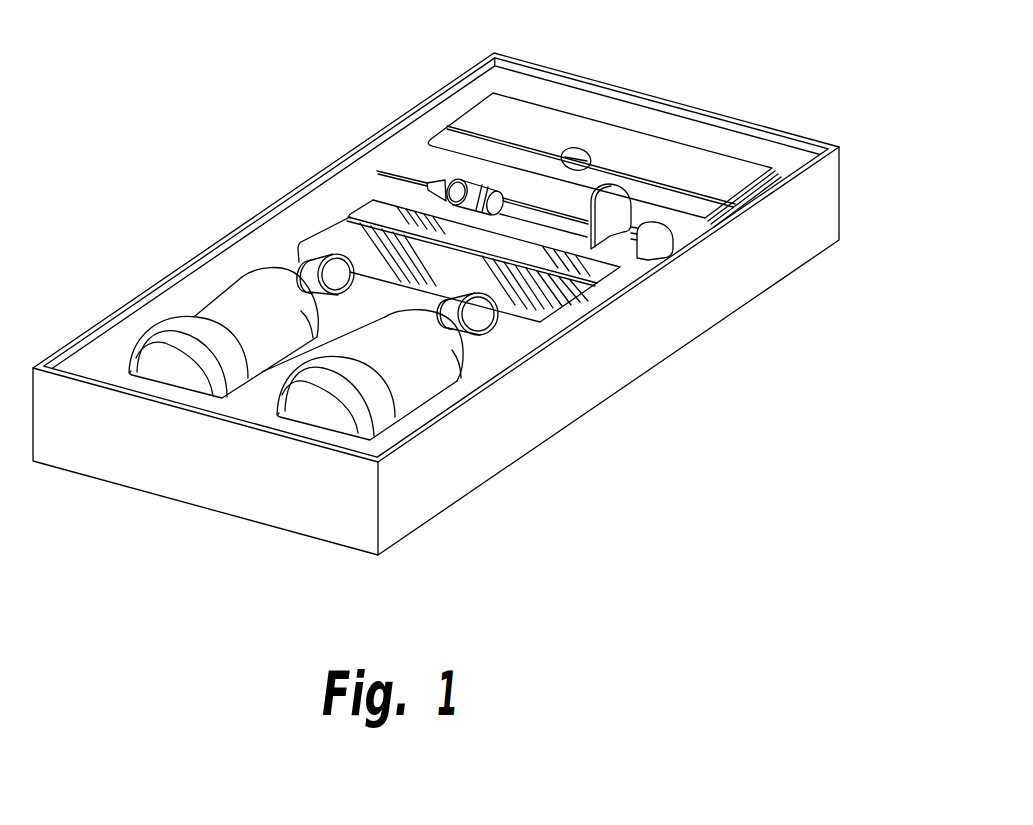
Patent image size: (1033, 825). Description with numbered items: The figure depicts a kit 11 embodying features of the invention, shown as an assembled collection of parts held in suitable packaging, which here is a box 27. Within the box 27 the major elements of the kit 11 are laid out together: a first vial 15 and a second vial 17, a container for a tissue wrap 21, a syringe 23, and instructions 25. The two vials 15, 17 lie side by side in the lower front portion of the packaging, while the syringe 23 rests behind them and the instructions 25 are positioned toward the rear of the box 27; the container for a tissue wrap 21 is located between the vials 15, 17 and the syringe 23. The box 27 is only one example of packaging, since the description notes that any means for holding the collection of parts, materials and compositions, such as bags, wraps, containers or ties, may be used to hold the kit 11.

The kit 11 is at (436, 308).
The first vial 15 is at (232, 307).
The second vial 17 is at (415, 372).
The container for a tissue wrap 21 is at (337, 207).
The syringe 23 is at (471, 180).
The instructions 25 is at (613, 143).
The box 27 is at (190, 471).